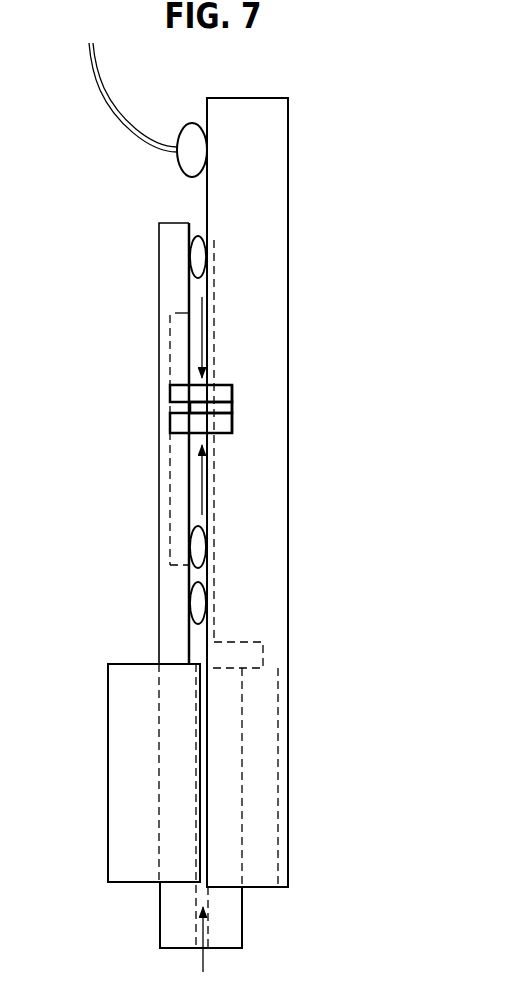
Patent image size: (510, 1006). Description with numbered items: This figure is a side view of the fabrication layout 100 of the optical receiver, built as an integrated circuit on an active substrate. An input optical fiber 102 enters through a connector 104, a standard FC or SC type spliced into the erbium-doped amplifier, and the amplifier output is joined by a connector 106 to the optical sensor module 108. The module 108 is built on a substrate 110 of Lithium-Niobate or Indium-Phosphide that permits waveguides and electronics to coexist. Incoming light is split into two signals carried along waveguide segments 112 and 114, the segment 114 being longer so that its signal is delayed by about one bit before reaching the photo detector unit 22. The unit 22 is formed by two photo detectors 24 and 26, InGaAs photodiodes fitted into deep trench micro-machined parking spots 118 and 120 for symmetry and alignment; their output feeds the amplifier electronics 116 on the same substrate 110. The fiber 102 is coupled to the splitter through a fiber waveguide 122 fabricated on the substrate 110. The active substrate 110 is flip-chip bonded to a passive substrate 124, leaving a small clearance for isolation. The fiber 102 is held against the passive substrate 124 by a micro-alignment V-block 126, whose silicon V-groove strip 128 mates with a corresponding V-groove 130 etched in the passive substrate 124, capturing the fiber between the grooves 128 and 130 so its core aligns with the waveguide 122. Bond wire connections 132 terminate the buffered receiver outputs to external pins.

The photo detector unit 22 is at (145, 311).
The photo detector 24 is at (172, 418).
The photo detector 26 is at (172, 388).
The fabrication layout 100 is at (72, 673).
The input optical fiber 102 is at (173, 917).
The connector 104 is at (178, 940).
The connector 106 is at (208, 887).
The optical sensor module 108 is at (142, 618).
The substrate 110 is at (171, 274).
The waveguide segment 112 is at (199, 492).
The waveguide segment 114 is at (192, 340).
The amplifier electronics 116 is at (190, 527).
The parking spot 118 is at (233, 428).
The parking spot 120 is at (233, 388).
The fiber waveguide 122 is at (198, 652).
The passive substrate 124 is at (240, 97).
The micro-alignment V-block 126 is at (120, 812).
The V-groove strip 128 is at (170, 828).
The V-groove 130 is at (222, 832).
The bond wire connections 132 is at (188, 125).